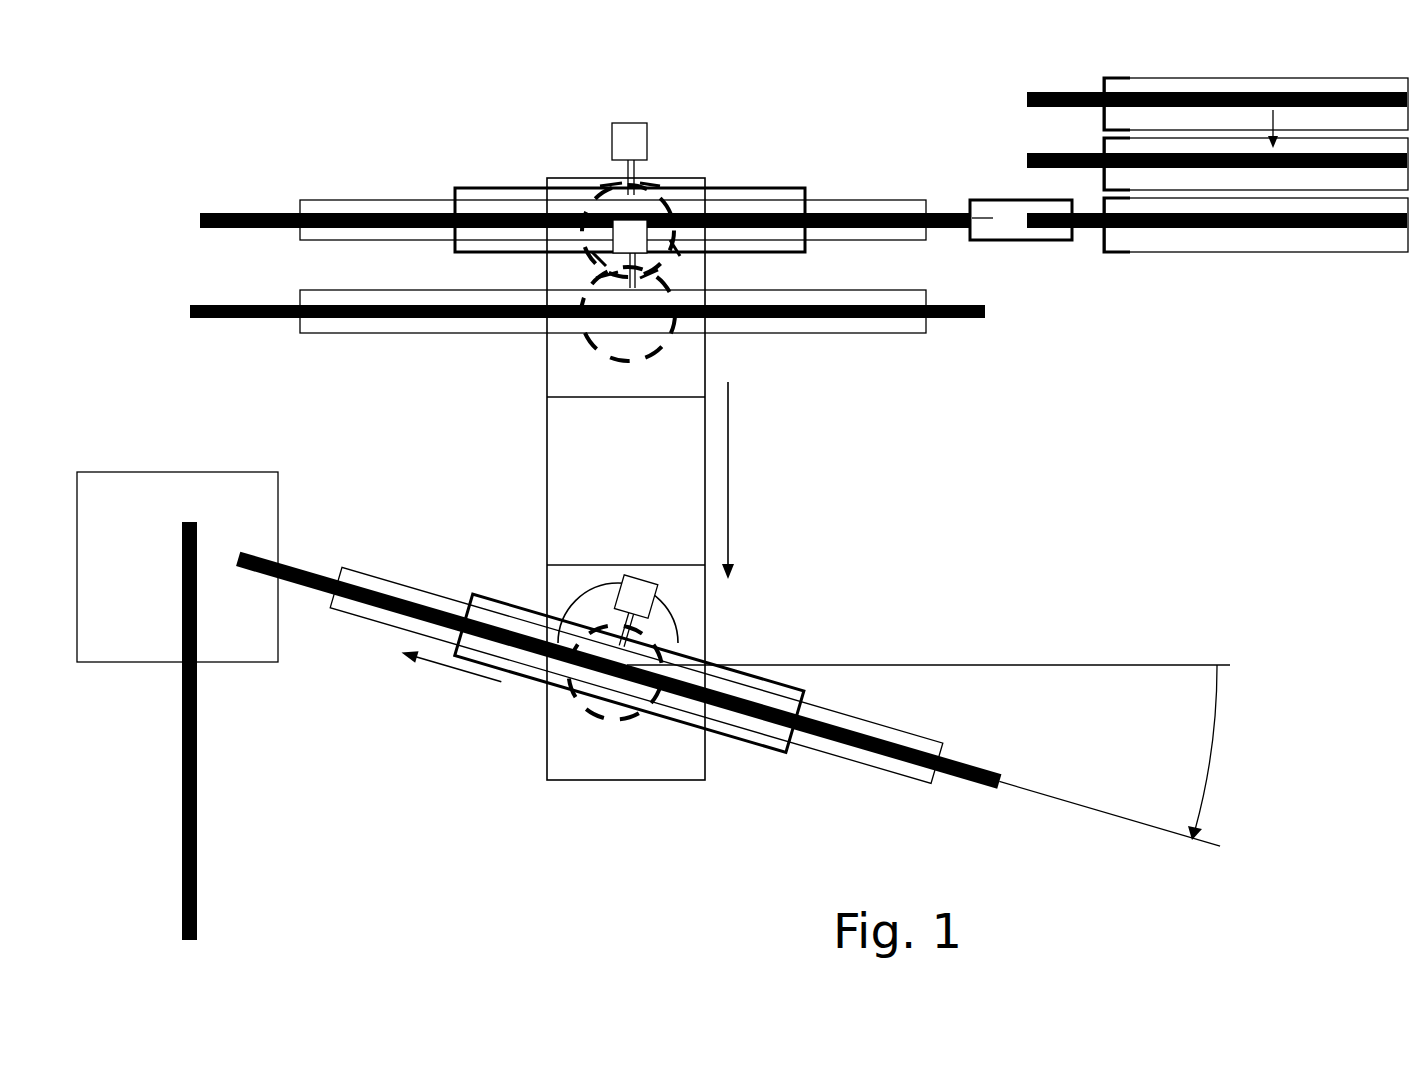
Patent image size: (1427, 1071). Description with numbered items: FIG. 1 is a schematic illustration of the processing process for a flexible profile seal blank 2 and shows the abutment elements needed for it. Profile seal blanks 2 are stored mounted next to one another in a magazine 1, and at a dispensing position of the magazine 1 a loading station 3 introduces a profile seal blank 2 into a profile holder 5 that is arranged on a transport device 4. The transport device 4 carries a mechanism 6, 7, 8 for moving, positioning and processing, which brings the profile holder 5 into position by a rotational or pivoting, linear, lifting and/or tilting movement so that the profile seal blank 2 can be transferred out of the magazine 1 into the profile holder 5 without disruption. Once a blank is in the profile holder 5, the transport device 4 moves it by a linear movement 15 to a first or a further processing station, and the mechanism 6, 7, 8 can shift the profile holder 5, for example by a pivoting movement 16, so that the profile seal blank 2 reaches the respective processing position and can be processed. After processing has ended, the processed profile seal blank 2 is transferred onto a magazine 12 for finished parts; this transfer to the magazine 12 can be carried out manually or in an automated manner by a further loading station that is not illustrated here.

The magazine 1 is at (1178, 88).
The profile seal blank 2 is at (247, 212).
The loading station 3 is at (1007, 210).
The transport device 4 is at (652, 820).
The profile holder 5 is at (512, 183).
The mechanism for moving, positioning, processing 6 is at (662, 197).
The mechanism for moving, positioning, processing 7 is at (585, 345).
The mechanism for moving, positioning, processing 8 is at (673, 645).
The magazine for finished parts 12 is at (200, 503).
The linear movement 15 is at (728, 477).
The pivoting movement 16 is at (1213, 757).